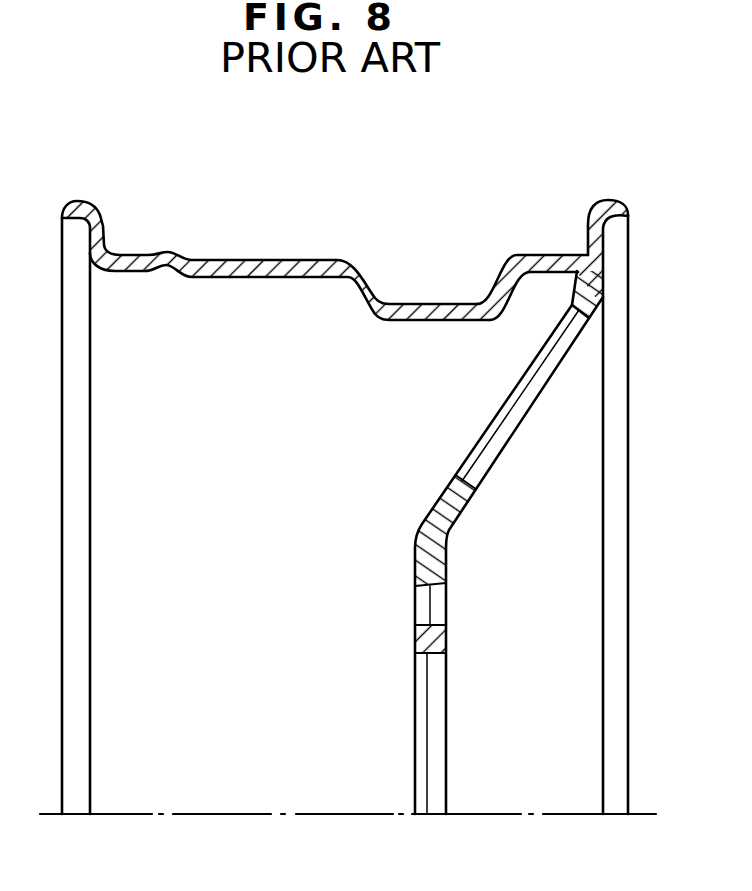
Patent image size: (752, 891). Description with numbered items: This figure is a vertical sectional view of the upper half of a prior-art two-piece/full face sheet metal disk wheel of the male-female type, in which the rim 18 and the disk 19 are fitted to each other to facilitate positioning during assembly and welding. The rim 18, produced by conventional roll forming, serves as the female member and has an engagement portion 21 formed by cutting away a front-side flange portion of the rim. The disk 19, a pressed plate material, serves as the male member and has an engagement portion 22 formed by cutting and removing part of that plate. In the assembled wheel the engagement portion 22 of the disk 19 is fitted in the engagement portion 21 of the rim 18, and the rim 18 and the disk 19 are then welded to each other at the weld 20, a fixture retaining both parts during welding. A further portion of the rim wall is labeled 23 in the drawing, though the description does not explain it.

The rim 18 is at (277, 262).
The disk 19 is at (430, 514).
The weld 20 is at (589, 253).
The engagement portion of the rim 21 is at (604, 297).
The engagement portion of the disk 22 is at (587, 255).
The flange wall 23 is at (604, 248).